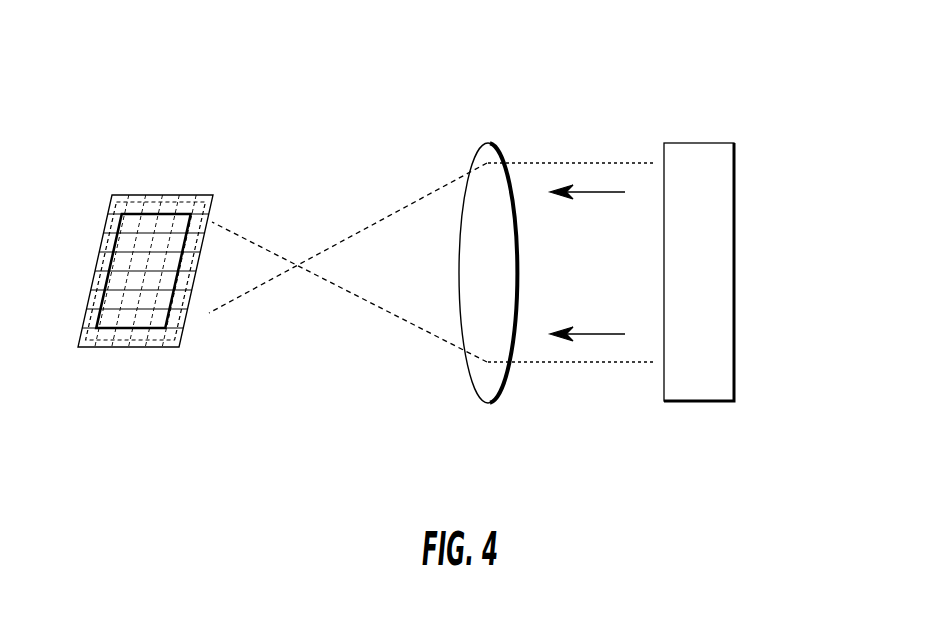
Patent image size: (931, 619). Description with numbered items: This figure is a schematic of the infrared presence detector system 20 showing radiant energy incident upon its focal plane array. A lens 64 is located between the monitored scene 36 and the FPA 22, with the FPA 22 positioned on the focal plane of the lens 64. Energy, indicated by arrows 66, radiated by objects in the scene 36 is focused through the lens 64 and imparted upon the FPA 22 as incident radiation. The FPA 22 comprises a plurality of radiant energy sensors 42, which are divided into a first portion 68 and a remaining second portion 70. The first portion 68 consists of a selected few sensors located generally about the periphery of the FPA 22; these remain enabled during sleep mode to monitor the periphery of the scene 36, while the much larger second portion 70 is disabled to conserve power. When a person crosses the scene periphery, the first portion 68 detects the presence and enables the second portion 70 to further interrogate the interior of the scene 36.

The detector system 20 is at (687, 53).
The FPA 22 is at (172, 162).
The monitored scene 36 is at (736, 219).
The radiant energy sensors 42 is at (192, 198).
The lens 64 is at (480, 315).
The arrows (radiated energy) 66 is at (582, 193).
The first portion 68 is at (182, 337).
The remaining portion 70 is at (95, 273).